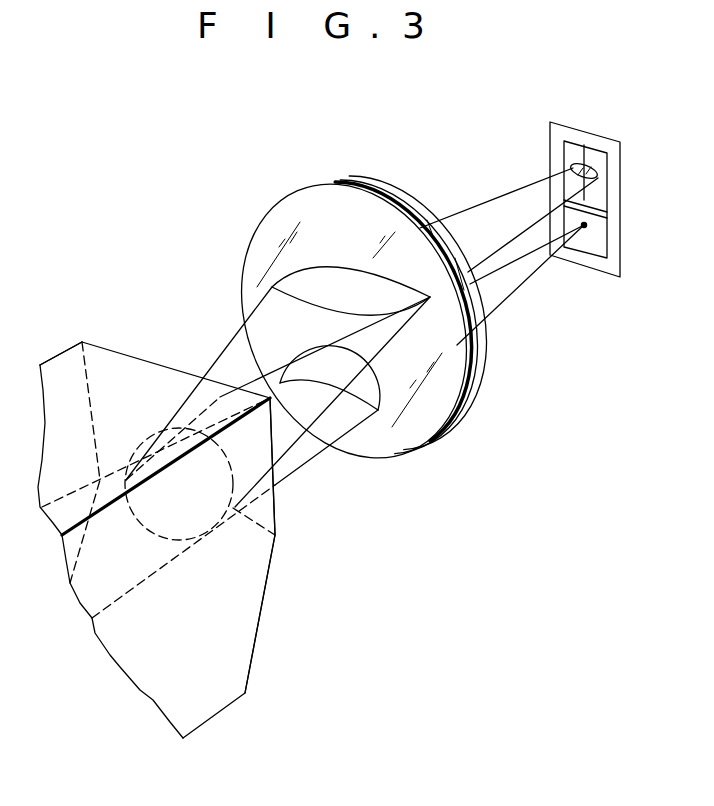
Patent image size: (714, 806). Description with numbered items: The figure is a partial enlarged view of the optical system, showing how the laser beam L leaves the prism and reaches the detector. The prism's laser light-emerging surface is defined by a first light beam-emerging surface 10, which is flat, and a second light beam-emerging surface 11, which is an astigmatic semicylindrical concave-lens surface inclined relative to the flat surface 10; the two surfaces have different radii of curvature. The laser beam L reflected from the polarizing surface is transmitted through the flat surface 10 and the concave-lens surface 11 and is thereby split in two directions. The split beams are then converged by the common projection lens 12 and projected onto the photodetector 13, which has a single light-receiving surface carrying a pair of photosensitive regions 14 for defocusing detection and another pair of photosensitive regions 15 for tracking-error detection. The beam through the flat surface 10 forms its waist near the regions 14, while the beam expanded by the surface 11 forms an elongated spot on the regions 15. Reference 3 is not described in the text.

The reference surface of light guide 3 is at (53, 348).
The first light beam-emerging surface 10 is at (276, 503).
The second light beam-emerging surface 11 is at (265, 590).
The common projection lens 12 is at (432, 422).
The photodetector 13 is at (550, 122).
The photosensitive regions for defocusing detection 14 is at (597, 218).
The photosensitive regions for tracking-error detection 15 is at (573, 153).
The laser beam L is at (178, 560).